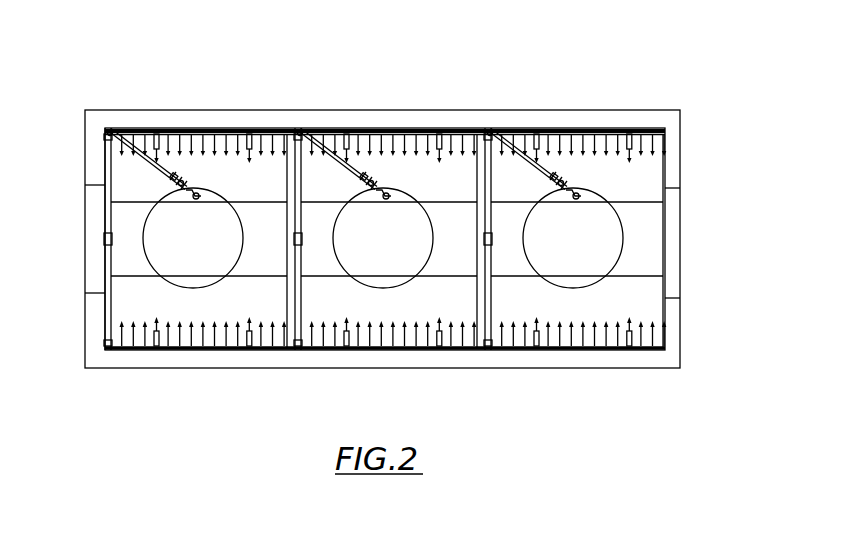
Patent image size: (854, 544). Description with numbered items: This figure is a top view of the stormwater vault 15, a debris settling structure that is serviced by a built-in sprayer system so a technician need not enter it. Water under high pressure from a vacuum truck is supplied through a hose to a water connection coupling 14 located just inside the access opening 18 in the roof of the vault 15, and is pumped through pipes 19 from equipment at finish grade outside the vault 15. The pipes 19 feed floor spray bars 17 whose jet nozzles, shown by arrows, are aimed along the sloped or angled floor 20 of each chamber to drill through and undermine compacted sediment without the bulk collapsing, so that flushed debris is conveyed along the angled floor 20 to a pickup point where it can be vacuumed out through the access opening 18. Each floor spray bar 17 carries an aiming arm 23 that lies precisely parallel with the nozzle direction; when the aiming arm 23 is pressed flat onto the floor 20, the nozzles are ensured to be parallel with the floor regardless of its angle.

The water connection coupling 14 is at (388, 193).
The stormwater vault 15 is at (683, 98).
The floor spray bar 17 is at (613, 357).
The access opening 18 is at (598, 198).
The pipes 19 is at (307, 183).
The angled floor 20 is at (645, 300).
The aiming arm 23 is at (637, 335).